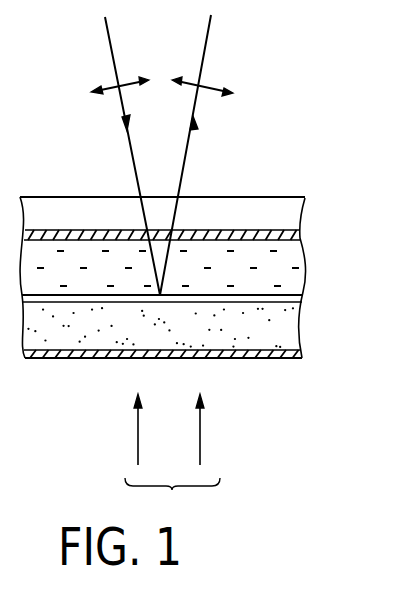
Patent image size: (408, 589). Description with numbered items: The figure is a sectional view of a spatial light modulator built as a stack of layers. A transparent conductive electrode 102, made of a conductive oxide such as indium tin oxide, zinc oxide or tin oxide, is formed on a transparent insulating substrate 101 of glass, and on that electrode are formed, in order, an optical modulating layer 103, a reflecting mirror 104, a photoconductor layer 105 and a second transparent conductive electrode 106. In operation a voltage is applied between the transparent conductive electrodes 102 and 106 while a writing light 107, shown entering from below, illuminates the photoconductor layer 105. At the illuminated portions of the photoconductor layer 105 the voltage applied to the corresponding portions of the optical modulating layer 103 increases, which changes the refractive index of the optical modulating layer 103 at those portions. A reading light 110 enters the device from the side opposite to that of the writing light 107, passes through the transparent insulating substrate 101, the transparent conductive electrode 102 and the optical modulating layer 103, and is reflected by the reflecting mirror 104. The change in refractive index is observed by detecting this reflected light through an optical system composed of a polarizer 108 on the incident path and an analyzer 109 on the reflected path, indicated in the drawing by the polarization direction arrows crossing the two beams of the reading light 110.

The transparent insulating substrate 101 is at (305, 213).
The transparent conductive electrode 102 is at (303, 233).
The optical modulating layer 103 is at (303, 278).
The reflecting mirror 104 is at (302, 298).
The photoconductor layer 105 is at (298, 327).
The transparent conductive electrode 106 is at (300, 355).
The writing light 107 is at (172, 456).
The polarizer 108 is at (105, 93).
The analyzer 109 is at (208, 93).
The reading light 110 is at (108, 45).